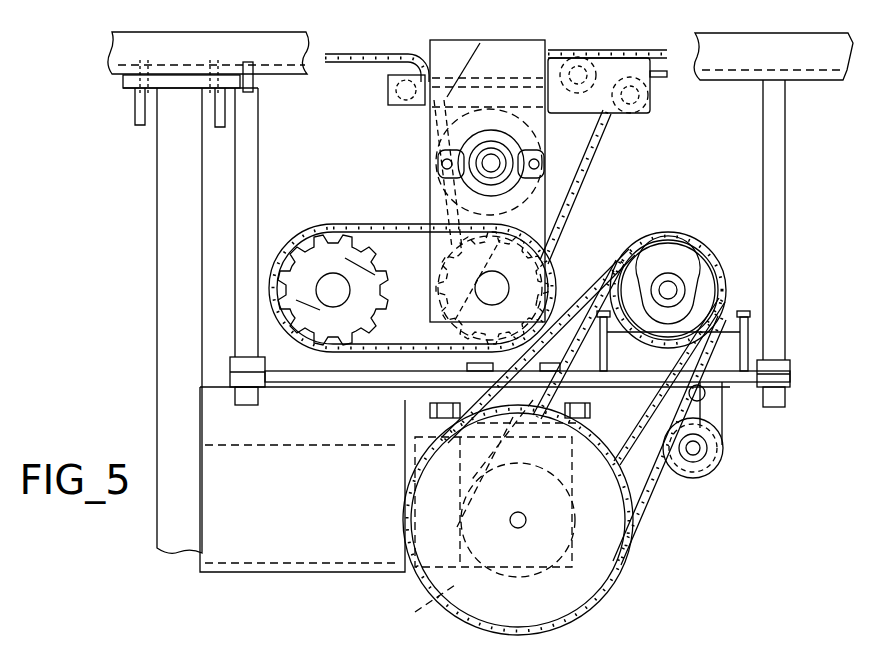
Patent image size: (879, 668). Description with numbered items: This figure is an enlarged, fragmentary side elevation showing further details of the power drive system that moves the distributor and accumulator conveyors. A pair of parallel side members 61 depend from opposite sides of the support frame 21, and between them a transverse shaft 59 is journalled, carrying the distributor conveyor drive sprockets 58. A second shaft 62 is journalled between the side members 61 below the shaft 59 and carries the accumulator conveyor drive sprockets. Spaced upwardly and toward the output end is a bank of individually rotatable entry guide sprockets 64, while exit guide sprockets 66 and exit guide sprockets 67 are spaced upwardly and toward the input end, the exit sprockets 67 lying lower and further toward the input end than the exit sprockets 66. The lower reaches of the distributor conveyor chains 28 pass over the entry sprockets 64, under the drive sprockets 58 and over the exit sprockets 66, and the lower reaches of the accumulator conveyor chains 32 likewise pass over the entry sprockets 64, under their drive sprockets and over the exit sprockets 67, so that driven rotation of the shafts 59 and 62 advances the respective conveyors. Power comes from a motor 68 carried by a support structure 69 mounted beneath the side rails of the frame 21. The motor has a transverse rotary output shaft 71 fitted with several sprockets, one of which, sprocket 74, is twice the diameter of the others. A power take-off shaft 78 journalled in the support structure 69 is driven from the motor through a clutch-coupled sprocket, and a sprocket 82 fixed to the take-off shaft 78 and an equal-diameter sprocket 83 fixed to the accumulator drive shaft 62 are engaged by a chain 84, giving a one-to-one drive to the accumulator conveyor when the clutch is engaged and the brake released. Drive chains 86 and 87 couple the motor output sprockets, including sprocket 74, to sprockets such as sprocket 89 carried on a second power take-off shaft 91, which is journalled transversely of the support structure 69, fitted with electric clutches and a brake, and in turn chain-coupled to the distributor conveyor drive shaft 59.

The support frame 21 is at (768, 45).
The distributor conveyor chains 28 is at (372, 58).
The accumulator conveyor chains 32 is at (592, 150).
The distributor conveyor drive sprockets 58 is at (548, 122).
The transverse shaft 59 is at (488, 164).
The side members 61 is at (533, 203).
The second shaft 62 is at (500, 288).
The entry guide sprockets 64 is at (416, 104).
The exit guide sprockets 66 is at (583, 46).
The exit guide sprockets 67 is at (623, 90).
The motor 68 is at (425, 594).
The support structure 69 is at (430, 413).
The rotary output shaft 71 is at (524, 523).
The sprocket 74 is at (565, 614).
The power take-off shaft 78 is at (333, 298).
The sprocket 82 is at (327, 258).
The sprocket 83 is at (532, 292).
The chain 84 is at (408, 230).
The drive chain 86 is at (636, 434).
The drive chain 87 is at (648, 490).
The sprocket 89 is at (710, 276).
The power take-off shaft 91 is at (670, 285).